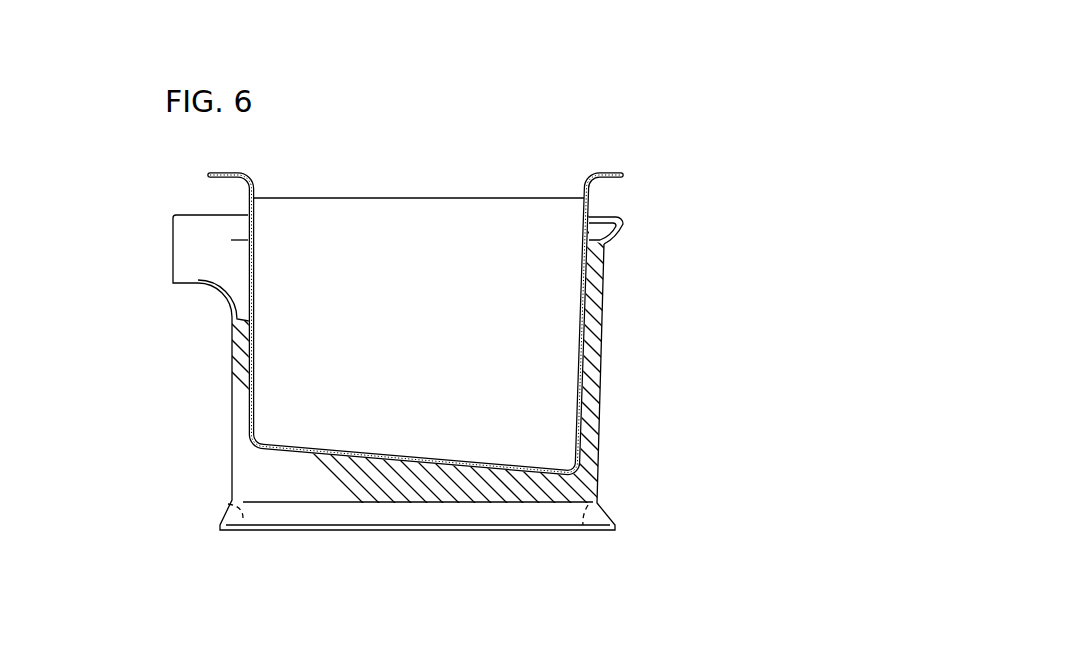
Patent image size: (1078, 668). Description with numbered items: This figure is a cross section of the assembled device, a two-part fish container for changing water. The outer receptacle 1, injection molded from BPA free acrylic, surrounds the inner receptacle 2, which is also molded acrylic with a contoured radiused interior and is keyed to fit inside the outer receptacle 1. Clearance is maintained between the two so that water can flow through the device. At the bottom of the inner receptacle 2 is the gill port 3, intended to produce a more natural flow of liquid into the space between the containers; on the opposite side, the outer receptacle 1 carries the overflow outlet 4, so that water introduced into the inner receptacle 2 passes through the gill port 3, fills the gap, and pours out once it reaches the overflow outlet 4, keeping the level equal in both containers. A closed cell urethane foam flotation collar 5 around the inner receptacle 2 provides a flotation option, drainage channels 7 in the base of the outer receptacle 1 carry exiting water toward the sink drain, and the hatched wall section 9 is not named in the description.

The outer receptacle 1 is at (606, 246).
The inner receptacle 2 is at (612, 174).
The gill port 3 is at (600, 471).
The overflow outlet 4 is at (596, 250).
The flotation collar 5 is at (173, 276).
The drainage channels 7 is at (228, 504).
The thermal insulation 9 is at (238, 390).